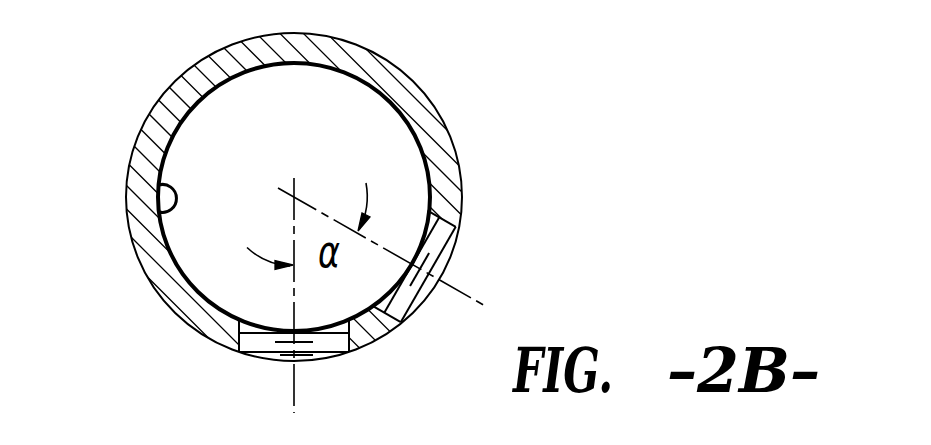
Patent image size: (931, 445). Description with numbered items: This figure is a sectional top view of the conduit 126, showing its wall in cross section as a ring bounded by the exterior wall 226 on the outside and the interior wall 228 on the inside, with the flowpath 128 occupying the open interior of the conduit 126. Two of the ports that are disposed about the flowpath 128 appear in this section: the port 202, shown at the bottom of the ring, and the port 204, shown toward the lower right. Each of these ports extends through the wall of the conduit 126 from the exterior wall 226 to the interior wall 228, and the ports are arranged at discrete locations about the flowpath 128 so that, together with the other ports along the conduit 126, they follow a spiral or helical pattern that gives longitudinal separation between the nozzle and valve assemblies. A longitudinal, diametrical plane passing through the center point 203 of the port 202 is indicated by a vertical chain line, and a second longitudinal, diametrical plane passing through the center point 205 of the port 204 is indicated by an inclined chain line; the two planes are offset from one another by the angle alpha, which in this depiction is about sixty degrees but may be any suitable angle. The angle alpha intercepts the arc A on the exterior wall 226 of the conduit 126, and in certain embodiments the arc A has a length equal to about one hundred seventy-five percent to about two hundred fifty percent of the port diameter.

The conduit 126 is at (467, 75).
The flowpath 128 is at (318, 136).
The exterior wall 226 is at (162, 98).
The interior wall 228 is at (167, 216).
The port 202 is at (268, 350).
The center point 203 is at (290, 363).
The port 204 is at (455, 248).
The center point 205 is at (447, 282).
The arc A is at (375, 343).